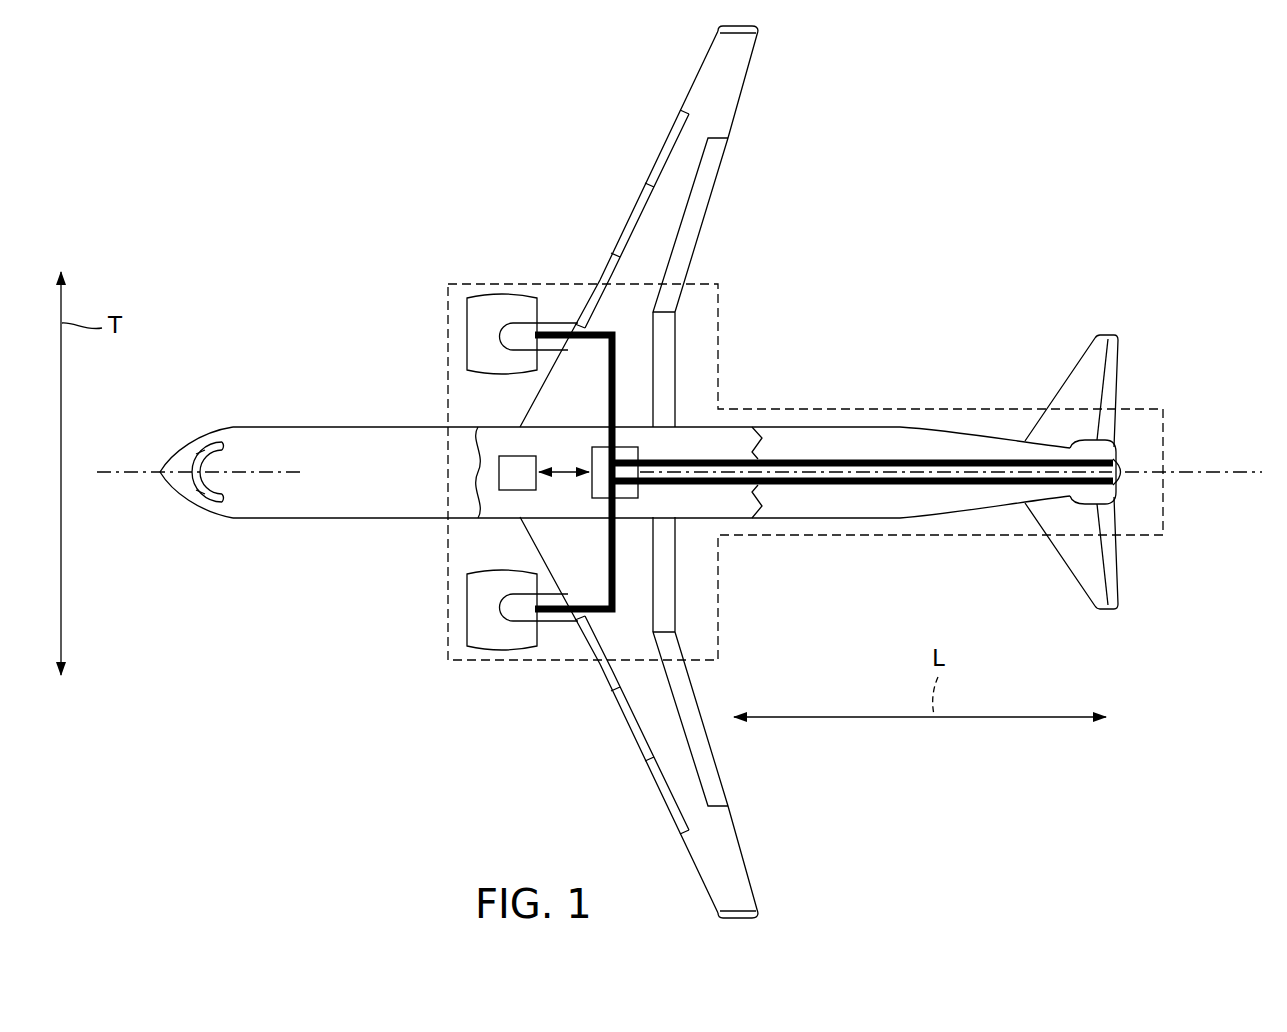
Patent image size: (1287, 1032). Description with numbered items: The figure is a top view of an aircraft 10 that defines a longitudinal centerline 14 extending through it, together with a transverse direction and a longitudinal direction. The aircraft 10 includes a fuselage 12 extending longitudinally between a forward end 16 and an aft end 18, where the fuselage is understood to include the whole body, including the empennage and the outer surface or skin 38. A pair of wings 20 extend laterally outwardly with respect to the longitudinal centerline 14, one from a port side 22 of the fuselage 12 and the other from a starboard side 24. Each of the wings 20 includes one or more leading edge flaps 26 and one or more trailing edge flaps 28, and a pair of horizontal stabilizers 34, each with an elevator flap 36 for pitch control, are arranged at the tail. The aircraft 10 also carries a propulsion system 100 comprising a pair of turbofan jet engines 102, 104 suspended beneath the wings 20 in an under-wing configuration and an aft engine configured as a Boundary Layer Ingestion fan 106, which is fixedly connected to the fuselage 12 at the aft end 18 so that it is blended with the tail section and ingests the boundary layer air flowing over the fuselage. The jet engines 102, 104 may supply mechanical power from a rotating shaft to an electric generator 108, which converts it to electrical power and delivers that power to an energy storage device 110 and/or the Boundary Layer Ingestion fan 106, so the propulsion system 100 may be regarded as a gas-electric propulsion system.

The aircraft 10 is at (942, 198).
The fuselage 12 is at (600, 473).
The longitudinal centerline 14 is at (122, 470).
The forward end 16 is at (156, 485).
The aft end 18 is at (1092, 483).
The wings 20 is at (674, 472).
The port side 22 is at (348, 538).
The starboard side 24 is at (332, 408).
The leading edge flaps 26 is at (638, 742).
The trailing edge flaps 28 is at (710, 747).
The horizontal stabilizers 34 is at (1098, 352).
The elevator flap 36 is at (1113, 352).
The outer surface or skin 38 is at (886, 492).
The propulsion system 100 is at (890, 409).
The turbofan jet engine 102 is at (492, 629).
The turbofan jet engine 104 is at (492, 316).
The Boundary Layer Ingestion fan 106 is at (1111, 434).
The electric generator 108 is at (640, 453).
The energy storage device 110 is at (499, 488).